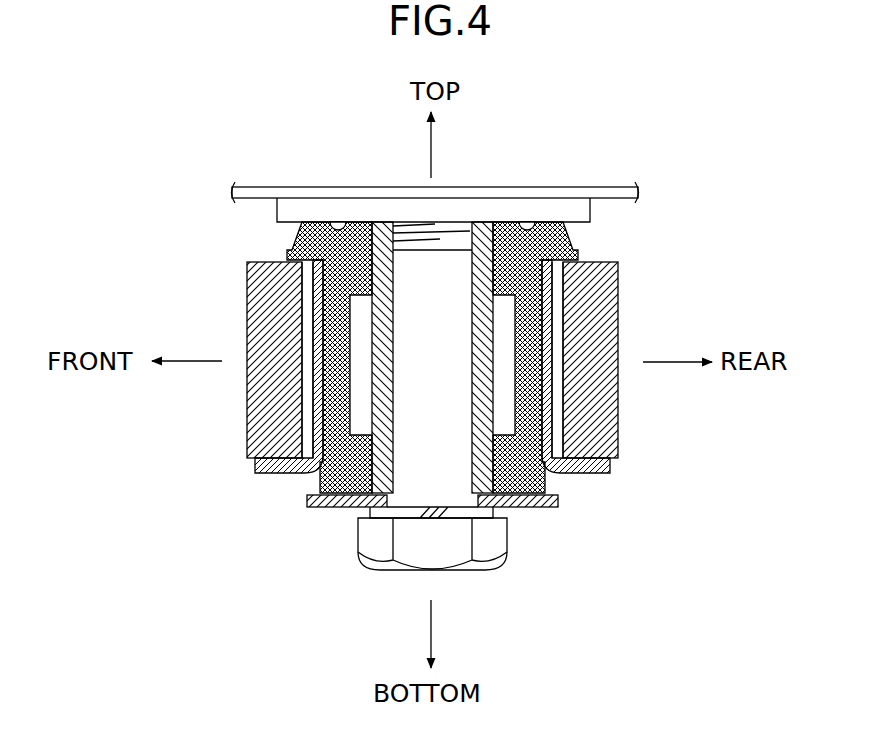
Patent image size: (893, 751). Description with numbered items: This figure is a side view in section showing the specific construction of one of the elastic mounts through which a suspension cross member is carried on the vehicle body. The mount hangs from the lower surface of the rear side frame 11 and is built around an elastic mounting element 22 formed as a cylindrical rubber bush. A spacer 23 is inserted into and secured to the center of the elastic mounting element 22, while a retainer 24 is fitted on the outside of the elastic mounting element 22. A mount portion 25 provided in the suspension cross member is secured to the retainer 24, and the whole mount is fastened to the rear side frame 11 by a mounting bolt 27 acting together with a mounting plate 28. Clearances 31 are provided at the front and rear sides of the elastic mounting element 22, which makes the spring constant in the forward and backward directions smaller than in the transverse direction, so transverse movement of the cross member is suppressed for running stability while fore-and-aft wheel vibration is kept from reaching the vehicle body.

The rear side frame 11 is at (595, 187).
The elastic mounting element 22 is at (285, 243).
The clearance 31 is at (503, 348).
The retainer 24 is at (563, 300).
The mount portion 25 is at (613, 400).
The spacer 23 is at (322, 507).
The mounting plate 28 is at (556, 506).
The mounting bolt 27 is at (507, 553).